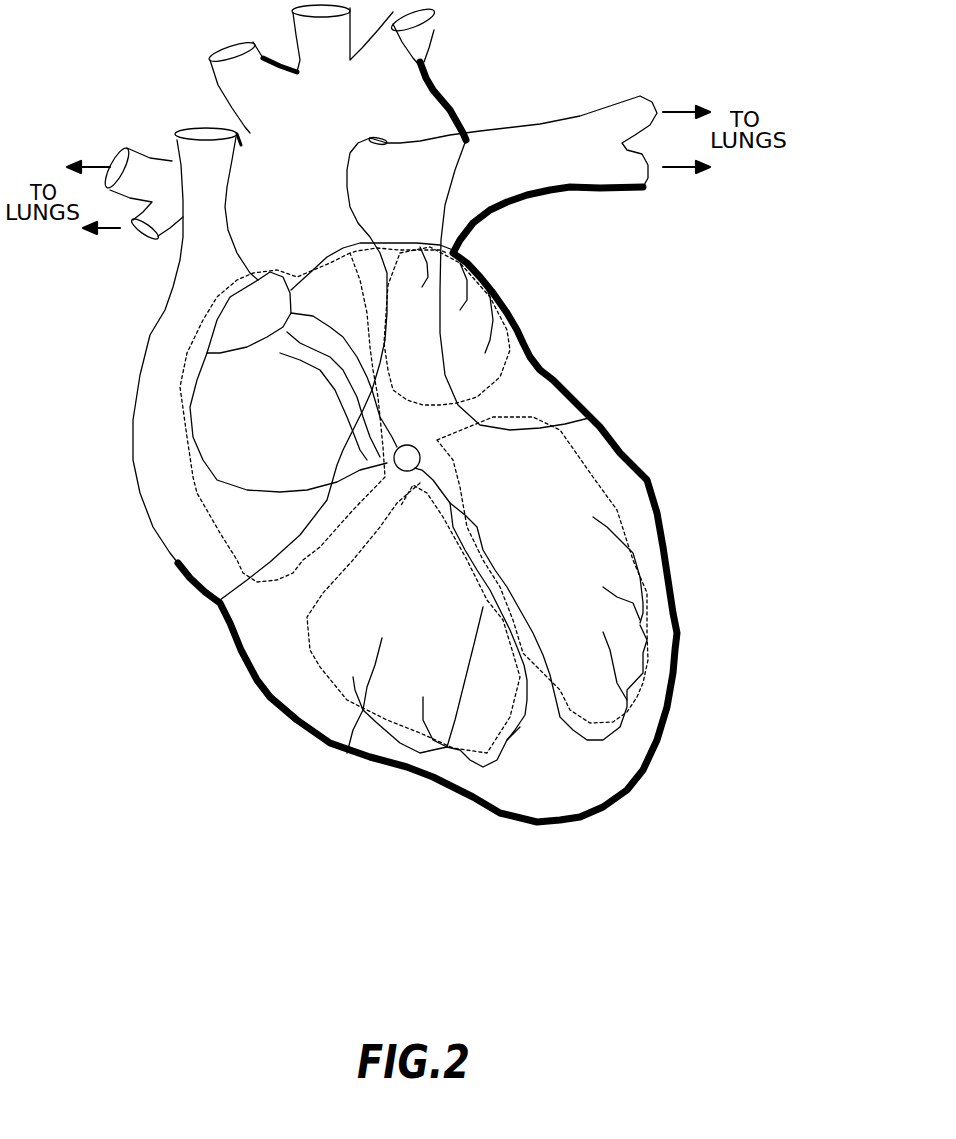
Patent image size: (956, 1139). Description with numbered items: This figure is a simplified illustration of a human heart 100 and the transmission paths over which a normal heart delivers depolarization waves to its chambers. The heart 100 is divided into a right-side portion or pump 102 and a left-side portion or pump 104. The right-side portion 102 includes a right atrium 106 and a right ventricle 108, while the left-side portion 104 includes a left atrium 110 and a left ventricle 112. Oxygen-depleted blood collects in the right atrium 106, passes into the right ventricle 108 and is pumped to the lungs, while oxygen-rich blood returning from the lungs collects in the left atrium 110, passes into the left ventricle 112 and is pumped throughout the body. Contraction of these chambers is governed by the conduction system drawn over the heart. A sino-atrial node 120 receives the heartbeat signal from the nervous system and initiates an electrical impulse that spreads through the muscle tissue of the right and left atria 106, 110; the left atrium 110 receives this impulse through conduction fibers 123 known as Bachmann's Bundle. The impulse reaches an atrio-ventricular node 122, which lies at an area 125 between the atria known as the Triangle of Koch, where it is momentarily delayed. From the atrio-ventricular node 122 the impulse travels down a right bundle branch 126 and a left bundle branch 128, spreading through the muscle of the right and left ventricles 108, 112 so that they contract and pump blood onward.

The heart 100 is at (158, 47).
The right-side portion 102 is at (201, 606).
The left-side portion 104 is at (676, 506).
The right atrium 106 is at (215, 503).
The right ventricle 108 is at (347, 753).
The left atrium 110 is at (508, 346).
The left ventricle 112 is at (603, 623).
The sino-atrial node 120 is at (237, 322).
The atrio-ventricular node 122 is at (413, 447).
The conduction fibers 123 is at (417, 247).
The area 125 is at (428, 458).
The right bundle branch 126 is at (447, 747).
The left bundle branch 128 is at (507, 587).